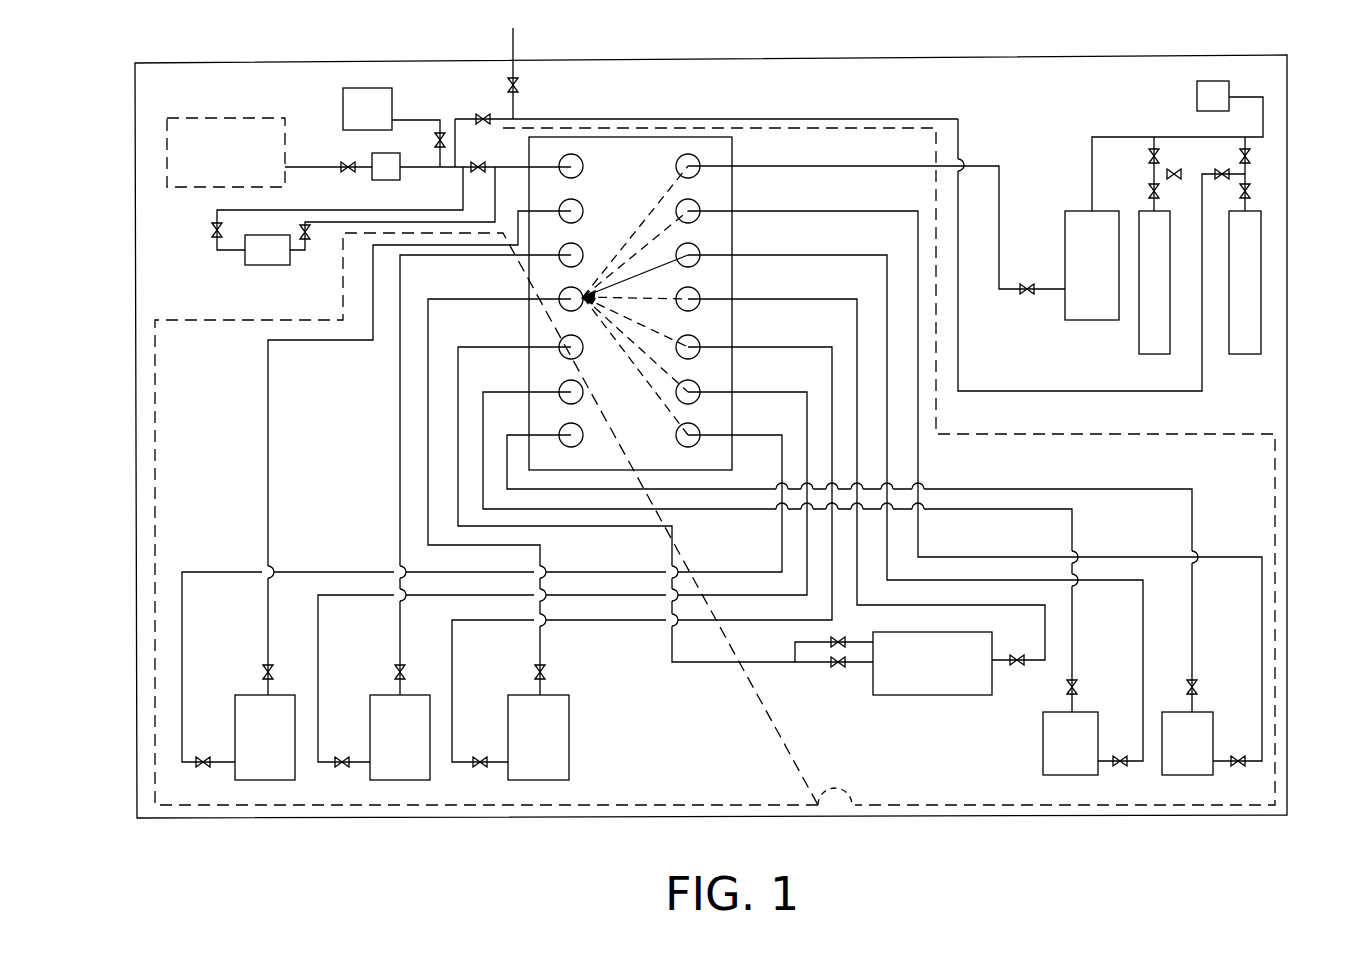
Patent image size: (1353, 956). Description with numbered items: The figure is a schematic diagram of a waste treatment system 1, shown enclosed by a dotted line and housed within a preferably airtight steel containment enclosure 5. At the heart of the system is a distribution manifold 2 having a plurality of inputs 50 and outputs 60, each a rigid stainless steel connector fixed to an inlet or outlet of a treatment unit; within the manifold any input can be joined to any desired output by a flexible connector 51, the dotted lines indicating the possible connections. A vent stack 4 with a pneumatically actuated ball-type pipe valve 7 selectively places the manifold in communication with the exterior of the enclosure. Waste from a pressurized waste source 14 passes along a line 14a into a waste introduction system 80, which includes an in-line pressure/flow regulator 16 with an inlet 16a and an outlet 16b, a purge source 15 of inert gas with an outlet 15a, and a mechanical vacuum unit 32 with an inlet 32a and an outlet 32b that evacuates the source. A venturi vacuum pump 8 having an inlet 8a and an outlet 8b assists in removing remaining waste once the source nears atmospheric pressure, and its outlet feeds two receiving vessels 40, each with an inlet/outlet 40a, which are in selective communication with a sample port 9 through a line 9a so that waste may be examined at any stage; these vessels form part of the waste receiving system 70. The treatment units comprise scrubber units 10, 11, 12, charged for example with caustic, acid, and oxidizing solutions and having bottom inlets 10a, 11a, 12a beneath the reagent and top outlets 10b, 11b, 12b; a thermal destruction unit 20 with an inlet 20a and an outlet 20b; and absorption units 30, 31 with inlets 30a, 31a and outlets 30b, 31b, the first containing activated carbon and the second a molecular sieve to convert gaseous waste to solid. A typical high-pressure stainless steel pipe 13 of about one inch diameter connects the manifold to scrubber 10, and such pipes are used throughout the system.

The waste treatment system 1 is at (838, 808).
The distribution manifold 2 is at (732, 139).
The vent stack 4 is at (513, 45).
The containment enclosure 5 is at (876, 55).
The pipe valve 7 is at (483, 114).
The pump 8 is at (1065, 212).
The inlet 8a is at (1062, 288).
The outlet 8b is at (1092, 205).
The sample port 9 is at (1197, 93).
The line 9a is at (1229, 92).
The scrubber unit 10 is at (270, 780).
The inlet 10a is at (235, 760).
The outlet 10b is at (265, 694).
The scrubber unit 11 is at (405, 780).
The inlet 11a is at (370, 760).
The outlet 11b is at (397, 694).
The scrubber unit 12 is at (545, 780).
The inlet 12a is at (506, 760).
The outlet 12b is at (535, 694).
The pipe 13 is at (267, 360).
The waste source 14 is at (190, 185).
The line 14a is at (290, 170).
The purge source 15 is at (343, 96).
The outlet 15a is at (400, 118).
The in-line pressure/flow regulator 16 is at (390, 181).
The inlet 16a is at (350, 160).
The outlet 16b is at (418, 143).
The thermal destruction unit 20 is at (888, 696).
The inlet 20a is at (993, 666).
The outlet 20b is at (872, 664).
The absorption unit 30 is at (1043, 762).
The inlet 30a is at (1105, 760).
The valve 30b is at (1075, 711).
The absorption unit 31 is at (1162, 771).
The valve 31a is at (1225, 760).
The valve 31b is at (1195, 711).
The mechanical vacuum unit 32 is at (250, 266).
The inlet 32a is at (243, 251).
The outlet 32b is at (302, 252).
The receiving vessel 40 is at (1140, 353).
The inlet/outlet 40a is at (1150, 210).
The inputs 50 is at (582, 248).
The flexible connector 51 is at (642, 272).
The outputs 60 is at (676, 166).
The waste receiving system 70 is at (1015, 123).
The waste introduction system 80 is at (192, 104).